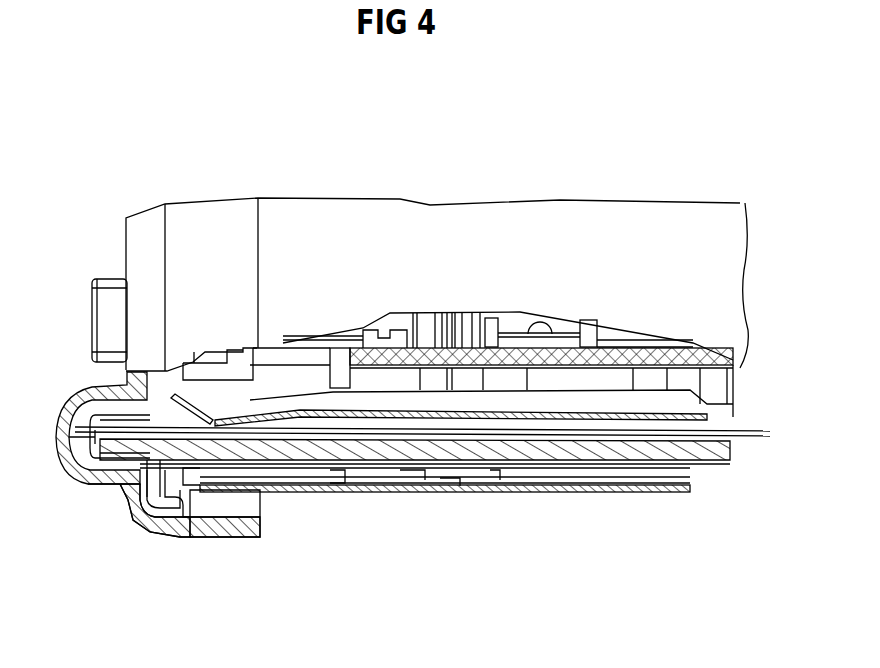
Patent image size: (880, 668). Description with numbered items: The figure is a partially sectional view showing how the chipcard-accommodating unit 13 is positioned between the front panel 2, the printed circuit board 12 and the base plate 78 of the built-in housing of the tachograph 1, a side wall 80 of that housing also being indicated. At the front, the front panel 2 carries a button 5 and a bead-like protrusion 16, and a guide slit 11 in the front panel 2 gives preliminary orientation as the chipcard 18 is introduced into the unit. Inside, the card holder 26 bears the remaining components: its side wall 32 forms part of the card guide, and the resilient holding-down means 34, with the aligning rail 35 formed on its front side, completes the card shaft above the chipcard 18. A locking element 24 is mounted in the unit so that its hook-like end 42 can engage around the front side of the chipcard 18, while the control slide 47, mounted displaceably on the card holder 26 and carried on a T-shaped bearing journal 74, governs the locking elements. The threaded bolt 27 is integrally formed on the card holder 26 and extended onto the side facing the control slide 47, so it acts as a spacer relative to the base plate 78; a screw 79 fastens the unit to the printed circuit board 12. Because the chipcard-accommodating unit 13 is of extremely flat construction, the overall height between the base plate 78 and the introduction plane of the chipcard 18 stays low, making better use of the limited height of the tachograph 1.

The tachograph 1 is at (196, 156).
The front panel 2 is at (216, 240).
The button 5 is at (108, 318).
The guide slit 11 is at (67, 435).
The printed circuit board 12 is at (593, 353).
The chipcard-accommodating unit 13 is at (740, 461).
The bead-like protrusion 16 is at (68, 467).
The chipcard 18 is at (630, 433).
The locking element 24 is at (217, 490).
The card holder 26 is at (592, 447).
The threaded bolt 27 is at (368, 382).
The side wall 32 is at (497, 400).
The holding-down means 34 is at (332, 413).
The aligning rail 35 is at (198, 400).
The end of locking element 42 is at (82, 445).
The control slide 47 is at (508, 470).
The T-shaped bearing journal 74 is at (450, 490).
The base plate 78 is at (690, 490).
The screw 79 is at (398, 338).
The side wall of built-in housing 80 is at (703, 240).